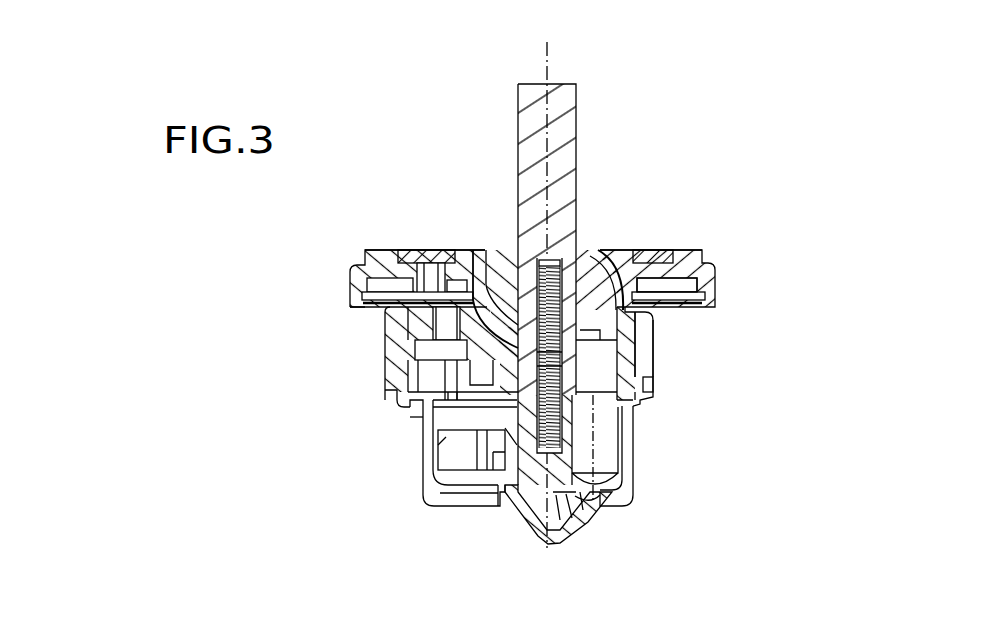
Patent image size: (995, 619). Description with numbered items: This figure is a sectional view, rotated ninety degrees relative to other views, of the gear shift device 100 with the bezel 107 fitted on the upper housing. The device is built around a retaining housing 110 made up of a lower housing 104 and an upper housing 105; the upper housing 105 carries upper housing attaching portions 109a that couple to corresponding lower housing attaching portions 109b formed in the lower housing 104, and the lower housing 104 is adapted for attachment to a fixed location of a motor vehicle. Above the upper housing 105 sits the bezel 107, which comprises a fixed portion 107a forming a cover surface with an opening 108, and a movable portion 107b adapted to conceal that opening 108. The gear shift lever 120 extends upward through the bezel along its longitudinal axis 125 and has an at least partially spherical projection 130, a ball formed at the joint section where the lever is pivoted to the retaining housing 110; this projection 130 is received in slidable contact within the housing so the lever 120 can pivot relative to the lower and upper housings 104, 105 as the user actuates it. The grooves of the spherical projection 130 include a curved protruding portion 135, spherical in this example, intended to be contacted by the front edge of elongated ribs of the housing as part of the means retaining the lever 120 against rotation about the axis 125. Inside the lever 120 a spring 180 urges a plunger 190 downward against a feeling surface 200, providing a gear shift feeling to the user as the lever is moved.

The gear shift device 100 is at (433, 191).
The lower housing 104 is at (402, 427).
The upper housing 105 is at (360, 323).
The bezel 107 is at (343, 280).
The fixed portion 107a is at (352, 252).
The movable portion 107b is at (623, 250).
The opening 108 is at (602, 248).
The upper housing attaching portions 109a is at (650, 388).
The lower housing attaching portions 109b is at (648, 371).
The retaining housing 110 is at (400, 406).
The gear shift lever 120 is at (574, 126).
The longitudinal axis 125 is at (556, 72).
The at least partially spherical projection 130 is at (497, 243).
The curved protruding portion 135 is at (603, 290).
The spring 180 is at (553, 398).
The plunger 190 is at (578, 537).
The feeling surface 200 is at (533, 540).